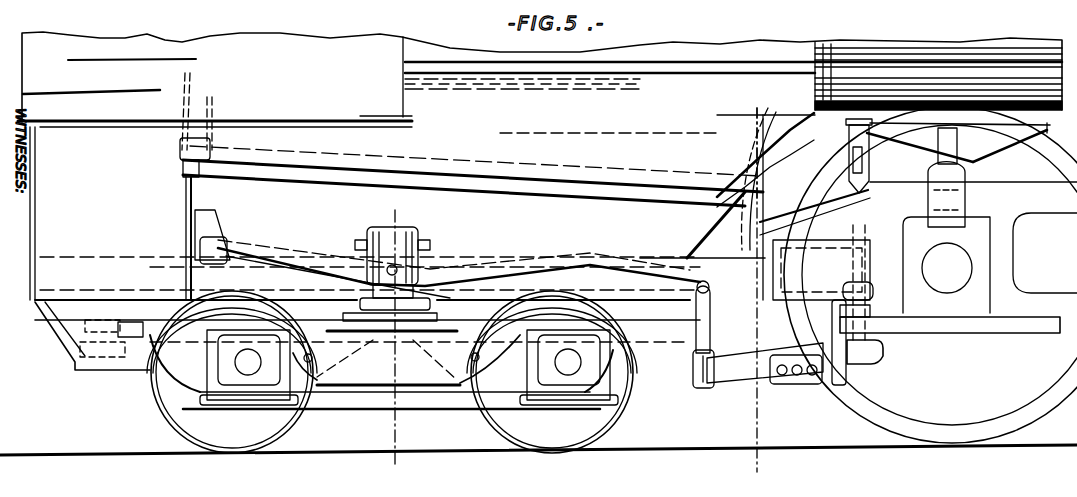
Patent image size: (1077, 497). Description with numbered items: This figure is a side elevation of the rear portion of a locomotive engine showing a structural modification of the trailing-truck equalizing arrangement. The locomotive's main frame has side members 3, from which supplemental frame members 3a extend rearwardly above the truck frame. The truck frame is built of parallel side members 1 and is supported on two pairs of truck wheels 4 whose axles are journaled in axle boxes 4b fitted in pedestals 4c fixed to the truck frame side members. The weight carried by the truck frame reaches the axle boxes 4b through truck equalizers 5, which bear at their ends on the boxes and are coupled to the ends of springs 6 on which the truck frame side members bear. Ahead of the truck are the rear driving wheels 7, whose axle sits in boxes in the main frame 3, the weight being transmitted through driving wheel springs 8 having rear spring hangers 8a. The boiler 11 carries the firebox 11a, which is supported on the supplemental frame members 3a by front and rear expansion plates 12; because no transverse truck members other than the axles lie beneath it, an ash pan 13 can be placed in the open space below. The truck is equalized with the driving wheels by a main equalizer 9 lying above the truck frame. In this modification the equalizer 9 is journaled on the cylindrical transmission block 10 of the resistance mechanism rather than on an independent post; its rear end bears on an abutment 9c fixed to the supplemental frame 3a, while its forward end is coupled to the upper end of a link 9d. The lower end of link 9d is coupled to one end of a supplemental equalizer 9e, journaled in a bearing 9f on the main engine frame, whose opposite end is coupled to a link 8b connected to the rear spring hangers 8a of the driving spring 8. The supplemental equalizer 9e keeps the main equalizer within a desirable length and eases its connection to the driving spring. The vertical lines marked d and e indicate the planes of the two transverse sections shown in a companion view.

The side member 1 is at (330, 323).
The side member of main frame 3 is at (1030, 205).
The supplemental frame member 3a is at (106, 256).
The truck wheel 4 is at (168, 432).
The axle box 4b is at (208, 352).
The pedestal 4c is at (168, 380).
The truck equalizer 5 is at (357, 380).
The spring 6 is at (455, 387).
The rear driving wheel 7 is at (860, 362).
The driving wheel spring 8 is at (987, 140).
The rear spring hanger 8a is at (869, 165).
The link 8b is at (866, 196).
The main equalizer 9 is at (470, 263).
The abutment 9c is at (222, 245).
The link 9d is at (712, 316).
The supplemental equalizer 9e is at (735, 383).
The bearing 9f is at (796, 384).
The cylindrical transmission block 10 is at (423, 292).
The boiler 11 is at (972, 47).
The firebox 11a is at (733, 97).
The expansion plate 12 is at (182, 188).
The ash pan 13 is at (197, 228).
The section line d d is at (380, 337).
The section line e e is at (752, 281).